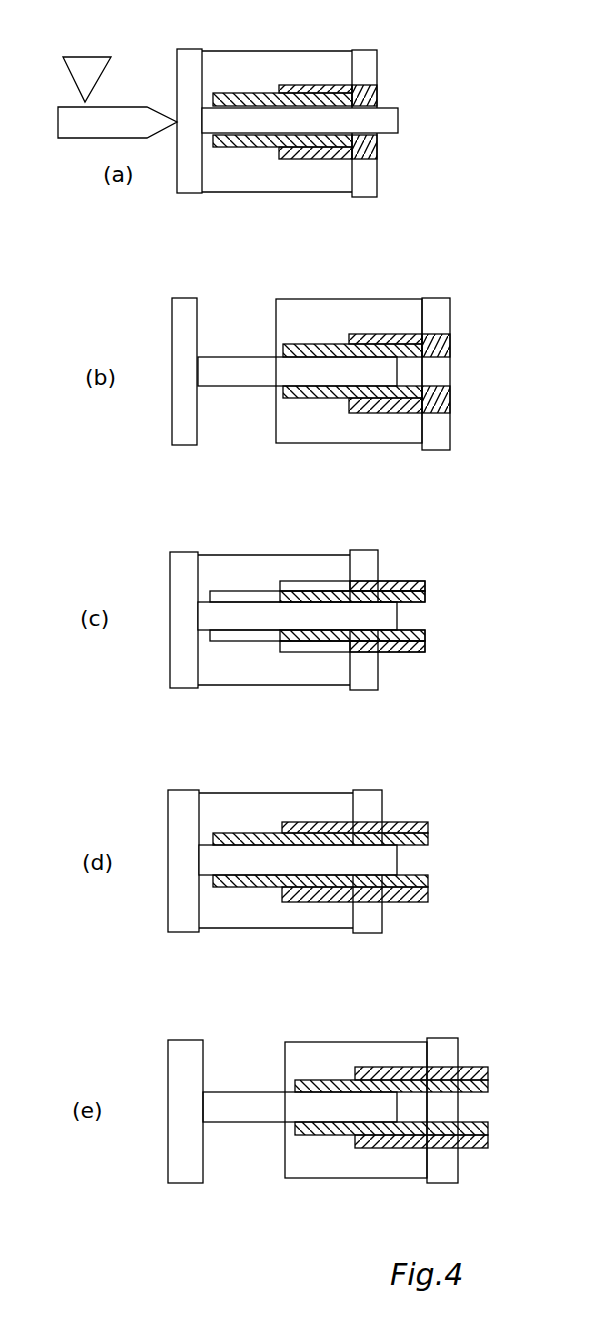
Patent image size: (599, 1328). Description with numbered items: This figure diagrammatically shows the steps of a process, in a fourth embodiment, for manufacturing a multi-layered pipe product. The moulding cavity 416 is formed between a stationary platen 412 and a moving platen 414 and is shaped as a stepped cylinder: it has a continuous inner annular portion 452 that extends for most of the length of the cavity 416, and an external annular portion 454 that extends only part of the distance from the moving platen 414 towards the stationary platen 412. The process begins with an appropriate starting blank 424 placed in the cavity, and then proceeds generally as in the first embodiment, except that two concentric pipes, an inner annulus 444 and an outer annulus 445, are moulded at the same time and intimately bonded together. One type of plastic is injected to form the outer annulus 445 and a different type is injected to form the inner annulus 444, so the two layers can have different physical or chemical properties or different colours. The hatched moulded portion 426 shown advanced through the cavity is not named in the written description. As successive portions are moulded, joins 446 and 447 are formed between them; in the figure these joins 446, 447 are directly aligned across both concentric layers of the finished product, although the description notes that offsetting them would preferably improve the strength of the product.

The stationary platen 412 is at (183, 197).
The moving platen 414 is at (362, 198).
The moulding cavity 416 is at (250, 92).
The starting blank 424 is at (298, 162).
The shifted sleeve bars 426 is at (242, 592).
The continuous inner annular portion 452 is at (242, 642).
The external annular portion 454 is at (307, 652).
The inner annulus 444 is at (215, 838).
The outer annulus 445 is at (280, 823).
The join 446 is at (337, 1135).
The join 447 is at (357, 1147).